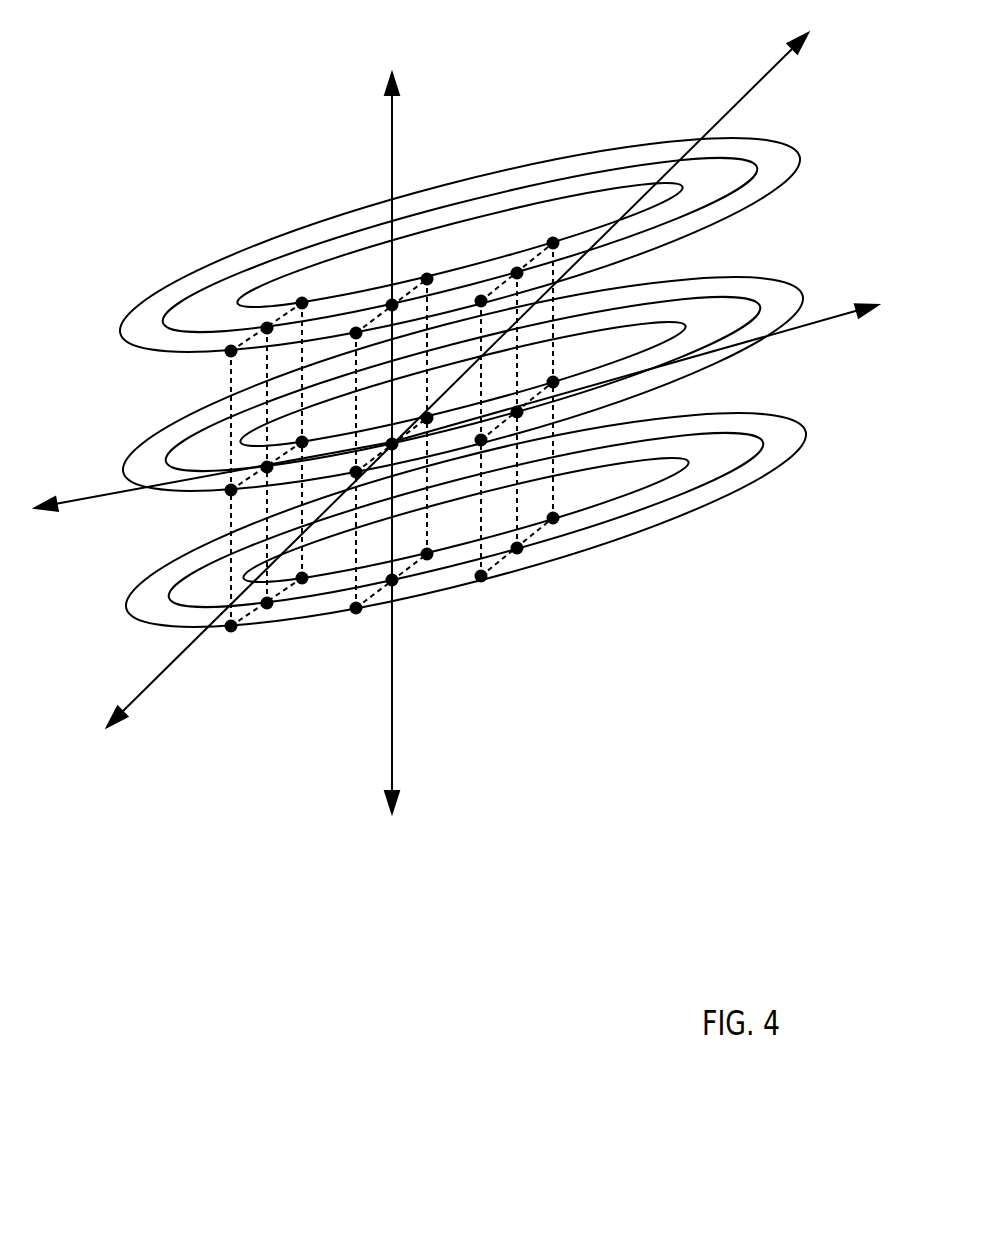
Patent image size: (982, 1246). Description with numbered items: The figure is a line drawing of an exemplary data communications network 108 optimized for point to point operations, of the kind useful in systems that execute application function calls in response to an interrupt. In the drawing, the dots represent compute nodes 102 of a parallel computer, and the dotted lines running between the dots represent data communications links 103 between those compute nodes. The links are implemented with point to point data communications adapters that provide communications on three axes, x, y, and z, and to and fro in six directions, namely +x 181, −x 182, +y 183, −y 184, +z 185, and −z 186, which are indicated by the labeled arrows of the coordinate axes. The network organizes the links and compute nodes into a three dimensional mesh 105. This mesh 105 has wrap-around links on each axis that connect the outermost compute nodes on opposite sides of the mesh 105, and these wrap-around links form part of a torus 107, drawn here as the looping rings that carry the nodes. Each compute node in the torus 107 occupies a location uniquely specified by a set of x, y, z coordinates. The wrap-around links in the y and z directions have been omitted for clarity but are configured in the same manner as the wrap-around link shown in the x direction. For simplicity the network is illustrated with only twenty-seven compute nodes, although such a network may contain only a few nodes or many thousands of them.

The compute nodes 102 is at (553, 518).
The data communications links 103 is at (230, 521).
The three dimensional mesh 105 is at (553, 241).
The torus 107 is at (206, 244).
The data communications network 108 is at (447, 586).
The +x direction 181 is at (917, 339).
The −x direction 182 is at (33, 550).
The +y direction 183 is at (853, 65).
The −y direction 184 is at (101, 781).
The +z direction 185 is at (410, 65).
The −z direction 186 is at (412, 879).